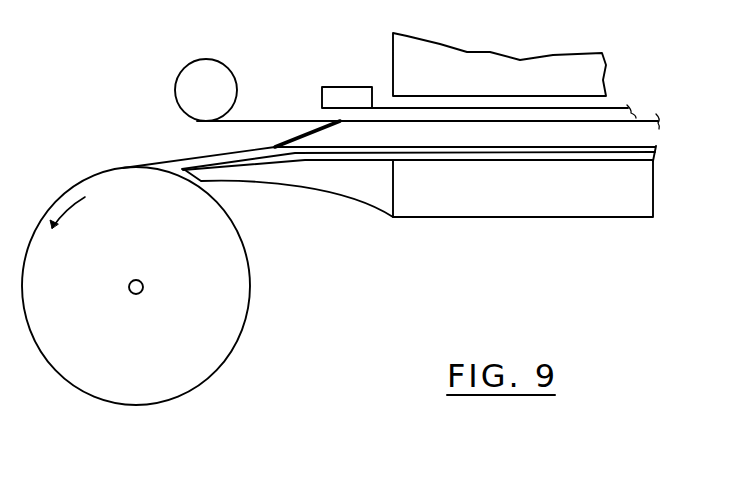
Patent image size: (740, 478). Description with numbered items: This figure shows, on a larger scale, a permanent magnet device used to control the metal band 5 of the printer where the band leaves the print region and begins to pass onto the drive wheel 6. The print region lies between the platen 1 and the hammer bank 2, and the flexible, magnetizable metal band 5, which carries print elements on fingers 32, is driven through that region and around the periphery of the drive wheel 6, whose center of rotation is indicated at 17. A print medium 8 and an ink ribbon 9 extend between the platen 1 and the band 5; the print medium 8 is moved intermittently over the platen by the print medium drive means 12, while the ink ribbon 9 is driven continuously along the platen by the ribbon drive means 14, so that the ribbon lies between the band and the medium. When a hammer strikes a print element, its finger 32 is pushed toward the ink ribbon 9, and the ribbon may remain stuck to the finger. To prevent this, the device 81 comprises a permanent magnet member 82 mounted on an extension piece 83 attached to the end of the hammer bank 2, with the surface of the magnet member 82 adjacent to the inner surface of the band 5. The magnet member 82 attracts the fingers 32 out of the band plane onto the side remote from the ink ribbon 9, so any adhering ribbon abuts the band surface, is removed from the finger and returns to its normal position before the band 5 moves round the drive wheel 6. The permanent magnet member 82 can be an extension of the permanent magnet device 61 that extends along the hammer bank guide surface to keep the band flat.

The platen 1 is at (498, 62).
The hammer bank 2 is at (550, 203).
The metal band 5 is at (163, 164).
The drive wheel 6 is at (223, 350).
The print medium 8 is at (610, 108).
The ink ribbon 9 is at (277, 120).
The print medium drive means 12 is at (355, 92).
The ribbon drive means 14 is at (181, 88).
The drum axis 17 is at (143, 290).
The finger 32 is at (327, 127).
The permanent magnet device 61 is at (653, 158).
The device 81 is at (358, 211).
The permanent magnet member 82 is at (196, 165).
The extension piece 83 is at (300, 183).